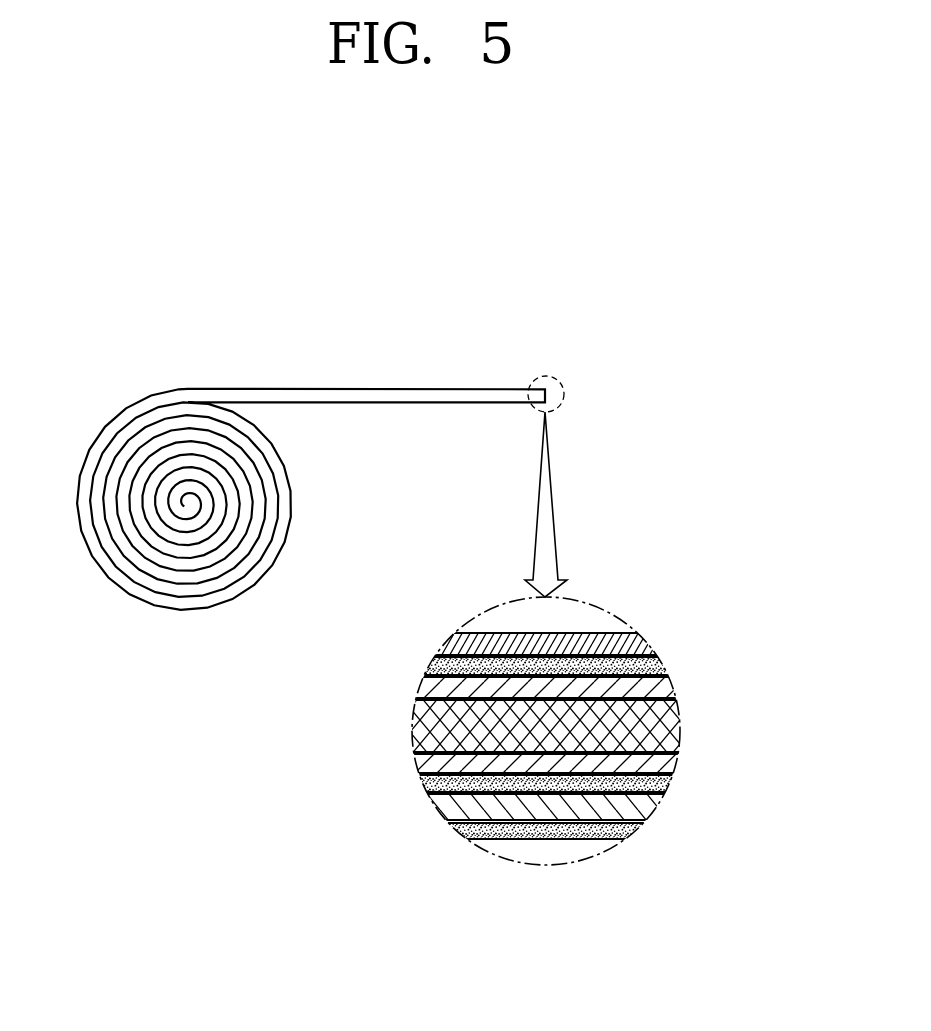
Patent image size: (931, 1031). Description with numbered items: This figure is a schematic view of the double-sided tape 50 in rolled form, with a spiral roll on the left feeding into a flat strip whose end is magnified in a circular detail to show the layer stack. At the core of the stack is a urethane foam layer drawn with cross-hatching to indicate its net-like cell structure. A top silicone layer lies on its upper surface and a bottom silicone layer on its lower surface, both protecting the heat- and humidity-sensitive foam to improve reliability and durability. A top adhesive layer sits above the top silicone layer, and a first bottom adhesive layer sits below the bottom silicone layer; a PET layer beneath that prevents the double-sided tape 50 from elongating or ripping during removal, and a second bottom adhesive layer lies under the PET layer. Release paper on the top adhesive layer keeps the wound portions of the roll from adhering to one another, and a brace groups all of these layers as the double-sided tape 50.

The double-sided tape 50 is at (609, 732).